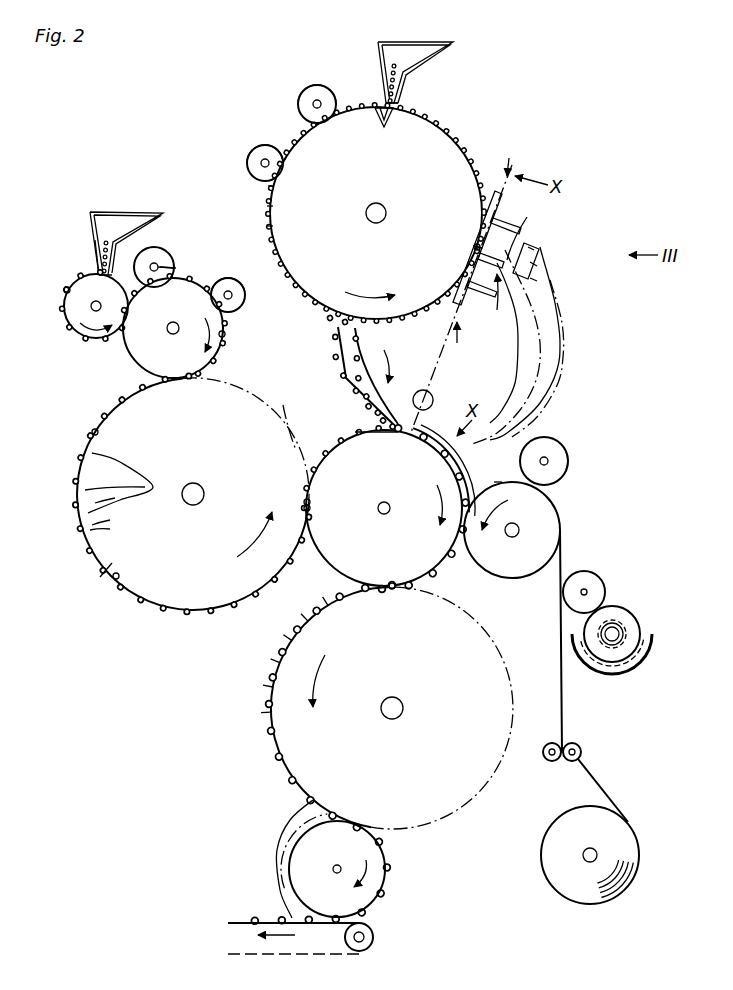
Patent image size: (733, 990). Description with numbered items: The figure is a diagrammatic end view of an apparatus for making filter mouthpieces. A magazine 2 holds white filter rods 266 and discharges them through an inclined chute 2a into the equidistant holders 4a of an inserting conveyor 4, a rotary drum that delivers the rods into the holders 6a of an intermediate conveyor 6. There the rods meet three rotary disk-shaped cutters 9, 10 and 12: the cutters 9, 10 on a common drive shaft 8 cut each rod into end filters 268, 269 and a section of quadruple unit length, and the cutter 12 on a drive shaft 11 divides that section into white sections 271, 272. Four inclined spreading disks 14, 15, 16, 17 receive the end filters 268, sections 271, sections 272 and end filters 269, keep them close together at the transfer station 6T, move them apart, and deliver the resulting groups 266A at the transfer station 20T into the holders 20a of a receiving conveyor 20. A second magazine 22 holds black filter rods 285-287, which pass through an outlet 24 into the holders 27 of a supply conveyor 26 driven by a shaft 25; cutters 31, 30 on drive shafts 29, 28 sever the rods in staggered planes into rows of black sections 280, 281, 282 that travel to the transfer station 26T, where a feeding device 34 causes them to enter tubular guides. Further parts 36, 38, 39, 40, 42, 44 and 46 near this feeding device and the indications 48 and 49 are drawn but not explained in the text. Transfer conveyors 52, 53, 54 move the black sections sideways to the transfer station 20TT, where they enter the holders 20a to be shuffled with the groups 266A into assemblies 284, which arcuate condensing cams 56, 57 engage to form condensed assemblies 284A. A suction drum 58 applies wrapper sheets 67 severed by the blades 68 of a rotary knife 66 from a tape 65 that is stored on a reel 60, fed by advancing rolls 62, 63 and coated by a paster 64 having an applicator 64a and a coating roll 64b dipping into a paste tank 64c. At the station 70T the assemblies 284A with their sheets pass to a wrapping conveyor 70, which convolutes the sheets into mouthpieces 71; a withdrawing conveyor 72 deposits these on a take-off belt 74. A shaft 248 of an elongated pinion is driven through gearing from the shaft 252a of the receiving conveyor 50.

The magazine 2 is at (93, 228).
The inclined chute 2a is at (99, 258).
The inserting conveyor 4 is at (70, 320).
The holders 4a is at (66, 290).
The intermediate conveyor 6 is at (138, 346).
The holders 6a is at (223, 334).
The transfer station 6T is at (186, 382).
The common drive shaft 8 is at (176, 268).
The rotary disk-shaped cutter 9 is at (166, 262).
The rotary disk-shaped cutter 10 is at (180, 268).
The drive shaft 11 is at (230, 278).
The rotary disk-shaped cutter 12 is at (240, 286).
The spreading disk 14 is at (83, 465).
The spreading disk 15 is at (85, 490).
The spreading disk 16 is at (92, 525).
The spreading disk 17 is at (112, 563).
The receiving conveyor 20 is at (333, 548).
The holders 20a is at (307, 425).
The transfer station 20T is at (311, 505).
The transfer station 20TT is at (392, 443).
The second magazine 22 is at (452, 44).
The inclined chute 24 is at (400, 100).
The shaft 25 is at (367, 218).
The supply conveyor 26 is at (455, 150).
The transfer station 26T is at (471, 248).
The holders 27 is at (376, 126).
The drive shaft 28 is at (262, 164).
The drive shaft 29 is at (315, 102).
The rotary disk-shaped cutter 30 is at (260, 147).
The rotary disk-shaped cutter 31 is at (322, 87).
The feeding device 34 is at (531, 246).
The guide surface 36 is at (524, 242).
The guide block 38 is at (541, 252).
The guide block surface 39 is at (536, 266).
The guide block surface 40 is at (537, 281).
The cutter arm 42 is at (478, 240).
The cutter arm 44 is at (480, 222).
The cutter arm 46 is at (470, 270).
The direction arrow 48 is at (522, 159).
The guide plate 49 is at (498, 343).
The receiving conveyor 50 is at (456, 343).
The transfer conveyor 52 is at (558, 344).
The transfer conveyor 53 is at (542, 361).
The transfer conveyor 54 is at (520, 385).
The condensing cam 56 is at (452, 448).
The condensing cam 57 is at (455, 461).
The suction drum 58 is at (548, 528).
The reel 60 is at (548, 858).
The advancing roll 62 is at (581, 751).
The advancing roll 63 is at (545, 758).
The paster 64 is at (619, 603).
The applicator 64a is at (583, 571).
The coating roll 64b is at (625, 626).
The paste tank 64c is at (640, 651).
The tape 65 is at (563, 695).
The rotary knife 66 is at (549, 457).
The wrapper sheets 67 is at (498, 481).
The blades 68 is at (567, 466).
The wrapping conveyor 70 is at (460, 620).
The station 70T is at (386, 591).
The mouthpieces 71 is at (279, 824).
The withdrawing conveyor 72 is at (372, 861).
The take-off belt 74 is at (260, 919).
The shaft 248 is at (432, 399).
The shaft 252a is at (384, 501).
The white filter rods 266 is at (107, 240).
The groups 266A is at (305, 500).
The end filter 268 is at (92, 453).
The end filter 269 is at (97, 432).
The white section 271 is at (95, 503).
The white section 272 is at (90, 530).
The row of black sections 280 is at (272, 189).
The row of black sections 281 is at (270, 208).
The row of black sections 282 is at (270, 226).
The assemblies 284 is at (408, 436).
The condensed assembly 284A is at (455, 560).
The black filter rods 285-287 is at (388, 92).